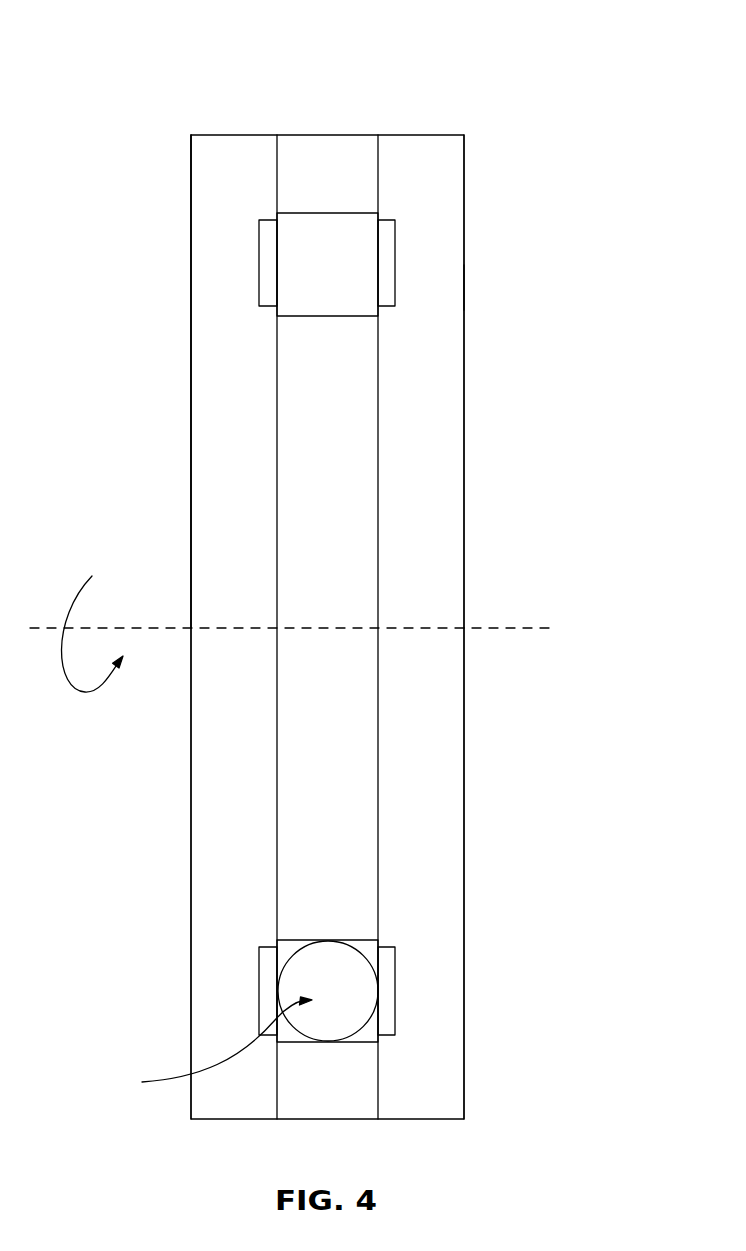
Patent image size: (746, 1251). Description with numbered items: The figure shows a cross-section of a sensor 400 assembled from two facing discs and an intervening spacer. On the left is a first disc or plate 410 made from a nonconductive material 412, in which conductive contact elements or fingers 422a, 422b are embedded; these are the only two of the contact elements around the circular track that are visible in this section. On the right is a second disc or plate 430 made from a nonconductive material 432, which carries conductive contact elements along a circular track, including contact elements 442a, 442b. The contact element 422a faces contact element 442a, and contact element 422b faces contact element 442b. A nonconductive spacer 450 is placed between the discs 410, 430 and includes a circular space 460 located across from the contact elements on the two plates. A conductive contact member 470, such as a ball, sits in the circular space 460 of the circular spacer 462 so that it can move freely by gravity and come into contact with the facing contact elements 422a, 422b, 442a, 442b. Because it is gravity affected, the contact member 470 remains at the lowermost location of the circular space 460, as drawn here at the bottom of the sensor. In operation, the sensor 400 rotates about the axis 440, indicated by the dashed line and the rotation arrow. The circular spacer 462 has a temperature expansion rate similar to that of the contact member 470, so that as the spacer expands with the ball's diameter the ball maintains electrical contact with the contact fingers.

The sensor 400 is at (118, 58).
The first disc or plate 410 is at (202, 868).
The nonconductive material 412 is at (201, 163).
The contact element 422a is at (270, 265).
The contact element 422b is at (272, 992).
The second disc or plate 430 is at (450, 192).
The nonconductive material 432 is at (462, 286).
The axis 440 is at (291, 622).
The contact element 442a is at (382, 265).
The contact element 442b is at (382, 995).
The nonconductive spacer 450 is at (464, 688).
The circular space 460 is at (363, 296).
The circular spacer 462 is at (350, 520).
The conductive contact member 470 is at (203, 1045).